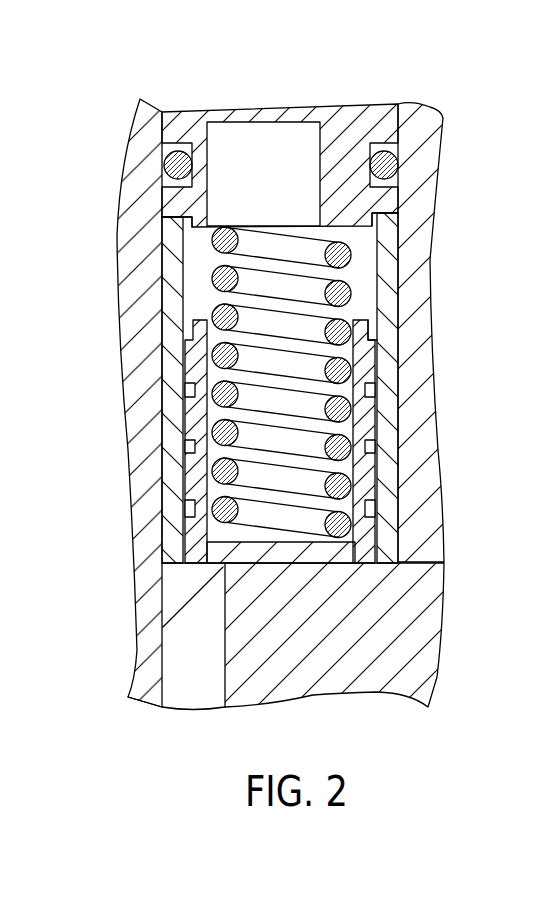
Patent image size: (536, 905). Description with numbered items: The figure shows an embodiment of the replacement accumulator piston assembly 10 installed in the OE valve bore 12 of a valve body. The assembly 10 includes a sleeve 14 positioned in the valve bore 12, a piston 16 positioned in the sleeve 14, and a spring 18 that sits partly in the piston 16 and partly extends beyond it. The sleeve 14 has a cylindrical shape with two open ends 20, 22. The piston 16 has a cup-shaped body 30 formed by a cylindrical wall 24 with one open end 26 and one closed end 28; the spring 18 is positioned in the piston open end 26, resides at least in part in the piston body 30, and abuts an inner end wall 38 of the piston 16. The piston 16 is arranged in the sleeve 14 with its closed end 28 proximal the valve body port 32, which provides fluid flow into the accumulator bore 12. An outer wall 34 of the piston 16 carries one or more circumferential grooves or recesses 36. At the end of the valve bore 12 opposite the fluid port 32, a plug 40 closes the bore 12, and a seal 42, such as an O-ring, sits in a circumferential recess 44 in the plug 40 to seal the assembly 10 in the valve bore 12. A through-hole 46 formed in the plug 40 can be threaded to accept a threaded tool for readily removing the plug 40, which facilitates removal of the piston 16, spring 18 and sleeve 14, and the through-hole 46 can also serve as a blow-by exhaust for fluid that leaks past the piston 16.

The replacement accumulator piston assembly 10 is at (80, 122).
The OE valve bore 12 is at (163, 452).
The sleeve 14 is at (397, 293).
The piston 16 is at (412, 405).
The spring 18 is at (345, 250).
The open end 20 is at (400, 203).
The open end 22 is at (360, 563).
The cylindrical wall 24 is at (378, 345).
The open end 26 is at (190, 320).
The closed end 28 is at (150, 636).
The cup-shaped body 30 is at (170, 492).
The valve body port 32 is at (187, 667).
The outer wall 34 is at (186, 445).
The circumferential grooves or recesses 36 is at (185, 388).
The inner end wall 38 is at (378, 502).
The plug 40 is at (358, 107).
The seal 42 is at (163, 163).
The circumferential recess 44 is at (400, 138).
The through-hole 46 is at (265, 122).